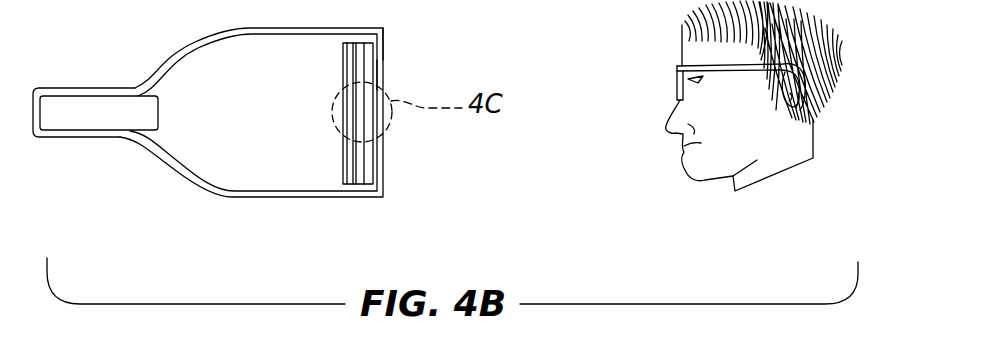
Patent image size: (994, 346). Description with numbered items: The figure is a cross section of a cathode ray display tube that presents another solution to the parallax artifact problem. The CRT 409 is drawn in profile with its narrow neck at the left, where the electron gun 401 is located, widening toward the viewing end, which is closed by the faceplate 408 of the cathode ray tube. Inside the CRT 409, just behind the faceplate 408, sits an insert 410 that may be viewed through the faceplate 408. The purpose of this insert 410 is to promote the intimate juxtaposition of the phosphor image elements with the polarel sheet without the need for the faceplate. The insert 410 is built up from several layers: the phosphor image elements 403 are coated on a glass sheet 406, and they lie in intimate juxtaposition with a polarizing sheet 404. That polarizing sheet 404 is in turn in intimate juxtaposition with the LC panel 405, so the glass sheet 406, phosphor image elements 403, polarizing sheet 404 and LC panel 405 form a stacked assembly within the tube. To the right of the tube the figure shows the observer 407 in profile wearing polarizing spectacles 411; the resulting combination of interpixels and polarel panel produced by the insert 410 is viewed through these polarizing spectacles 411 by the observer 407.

The electron gun 401 is at (60, 104).
The phosphor image elements 403 is at (342, 157).
The polarizing sheet 404 is at (357, 184).
The LC panel 405 is at (363, 180).
The glass sheet 406 is at (343, 184).
The observer 407 is at (797, 160).
The faceplate 408 is at (380, 42).
The CRT 409 is at (122, 136).
The insert 410 is at (370, 75).
The polarizing spectacles 411 is at (677, 88).